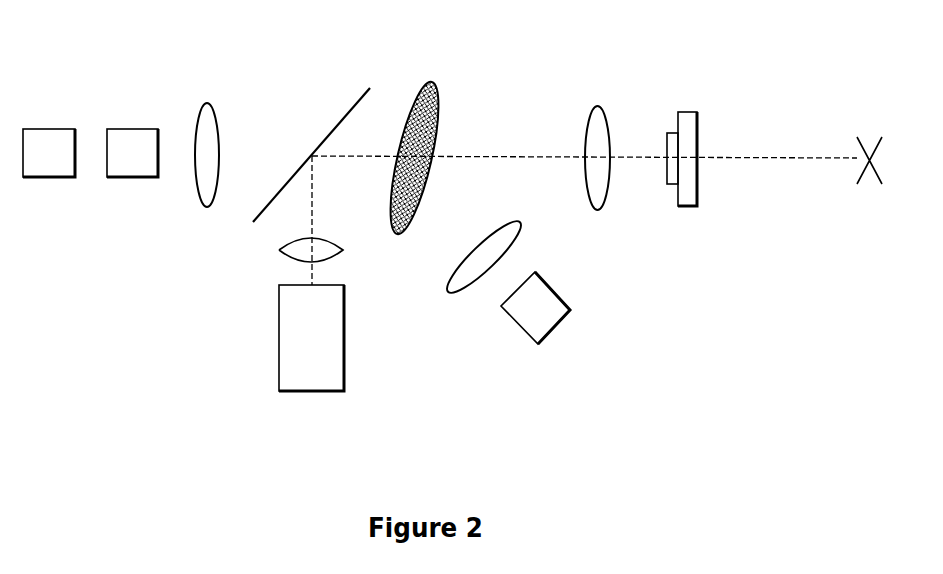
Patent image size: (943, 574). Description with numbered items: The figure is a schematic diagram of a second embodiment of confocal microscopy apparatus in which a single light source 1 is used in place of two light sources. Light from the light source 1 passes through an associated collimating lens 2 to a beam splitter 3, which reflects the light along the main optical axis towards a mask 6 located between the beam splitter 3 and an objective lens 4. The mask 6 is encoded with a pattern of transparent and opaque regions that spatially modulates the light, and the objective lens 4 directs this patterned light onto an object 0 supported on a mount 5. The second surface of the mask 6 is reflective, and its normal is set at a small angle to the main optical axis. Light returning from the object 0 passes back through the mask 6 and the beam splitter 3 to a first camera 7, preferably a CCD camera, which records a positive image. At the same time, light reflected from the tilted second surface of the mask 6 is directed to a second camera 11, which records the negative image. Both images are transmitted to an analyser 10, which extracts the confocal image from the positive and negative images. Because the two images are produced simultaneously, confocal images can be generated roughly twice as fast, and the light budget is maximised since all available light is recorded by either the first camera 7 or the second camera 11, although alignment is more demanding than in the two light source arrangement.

The object 0 is at (672, 133).
The first light source 1 is at (279, 340).
The collimating lens 2 is at (279, 250).
The beam splitter 3 is at (348, 102).
The objective lens 4 is at (596, 135).
The mount 5 is at (697, 137).
The mask 6 is at (433, 82).
The first camera 7 is at (135, 145).
The analyser 10 is at (52, 129).
The second camera 11 is at (537, 303).